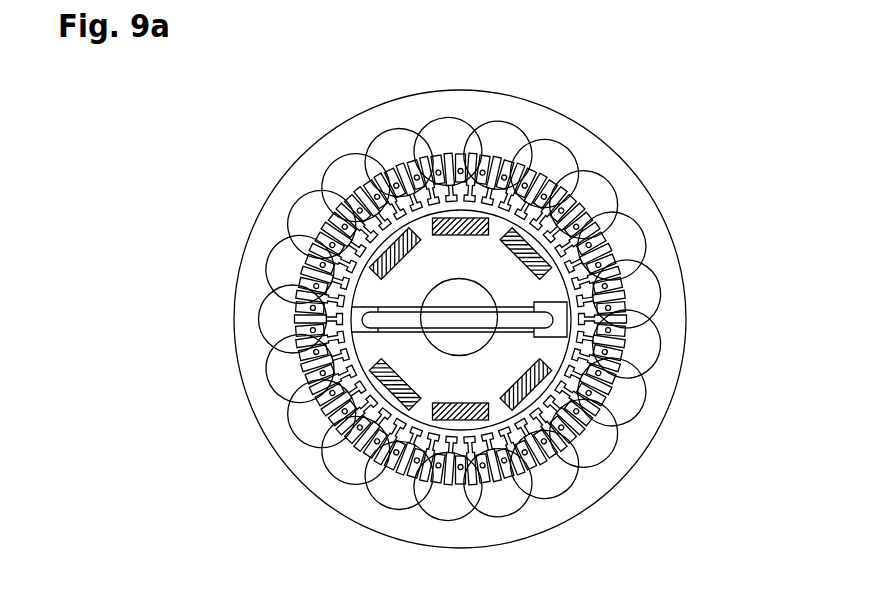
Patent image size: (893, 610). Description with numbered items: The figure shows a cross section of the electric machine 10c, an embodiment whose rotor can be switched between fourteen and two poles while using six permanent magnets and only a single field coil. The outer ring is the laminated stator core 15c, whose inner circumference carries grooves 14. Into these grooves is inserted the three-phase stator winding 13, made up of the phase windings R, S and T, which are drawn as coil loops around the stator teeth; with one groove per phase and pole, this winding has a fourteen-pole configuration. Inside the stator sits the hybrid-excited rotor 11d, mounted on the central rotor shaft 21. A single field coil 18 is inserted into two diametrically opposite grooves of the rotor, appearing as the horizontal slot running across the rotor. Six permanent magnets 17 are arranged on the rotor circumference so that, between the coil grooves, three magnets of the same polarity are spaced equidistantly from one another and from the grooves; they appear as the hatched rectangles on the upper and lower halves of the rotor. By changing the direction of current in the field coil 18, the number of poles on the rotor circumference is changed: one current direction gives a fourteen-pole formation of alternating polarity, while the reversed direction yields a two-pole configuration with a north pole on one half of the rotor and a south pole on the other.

The machine 10c is at (613, 140).
The stator winding 13 is at (612, 182).
The grooves 14 is at (628, 277).
The laminated stator core 15c is at (673, 322).
The rotor 11d is at (375, 303).
The permanent magnets 17 is at (378, 397).
The field coil 18 is at (383, 318).
The rotor shaft 21 is at (453, 342).
The phase winding R is at (390, 134).
The phase winding S is at (301, 208).
The phase winding T is at (336, 158).